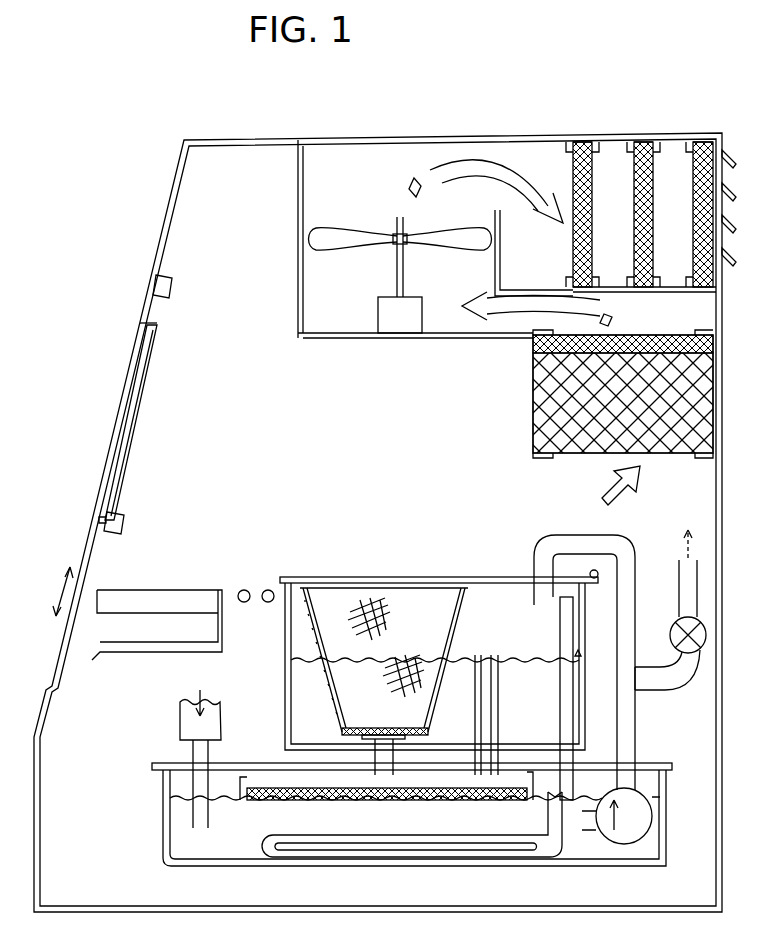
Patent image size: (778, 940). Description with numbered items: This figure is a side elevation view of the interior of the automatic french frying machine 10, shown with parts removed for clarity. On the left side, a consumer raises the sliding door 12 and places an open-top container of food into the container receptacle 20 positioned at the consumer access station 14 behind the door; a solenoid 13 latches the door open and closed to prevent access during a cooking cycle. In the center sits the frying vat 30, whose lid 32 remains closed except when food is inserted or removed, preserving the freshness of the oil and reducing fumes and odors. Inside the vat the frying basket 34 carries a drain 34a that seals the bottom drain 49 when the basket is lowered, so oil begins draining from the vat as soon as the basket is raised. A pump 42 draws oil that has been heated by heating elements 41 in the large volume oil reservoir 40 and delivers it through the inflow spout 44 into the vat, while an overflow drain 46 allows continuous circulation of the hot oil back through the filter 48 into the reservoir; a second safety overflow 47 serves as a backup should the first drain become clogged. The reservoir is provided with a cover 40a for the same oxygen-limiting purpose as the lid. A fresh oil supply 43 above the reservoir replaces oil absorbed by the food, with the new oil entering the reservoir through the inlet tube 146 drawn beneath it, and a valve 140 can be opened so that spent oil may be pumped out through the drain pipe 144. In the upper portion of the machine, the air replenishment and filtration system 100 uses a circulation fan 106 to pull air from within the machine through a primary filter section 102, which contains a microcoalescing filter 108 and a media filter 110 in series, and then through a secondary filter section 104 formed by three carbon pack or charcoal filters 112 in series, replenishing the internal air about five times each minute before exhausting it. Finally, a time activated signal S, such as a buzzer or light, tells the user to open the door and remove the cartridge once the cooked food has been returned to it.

The automatic french frying machine 10 is at (110, 95).
The air replenishment and filtration system 100 is at (365, 352).
The secondary filter section 104 is at (647, 130).
The circulation fan 106 is at (395, 278).
The carbon pack or charcoal filters 112 is at (702, 292).
The media filter 110 is at (540, 345).
The primary filter section 102 is at (531, 380).
The microcoalescing filter 108 is at (545, 406).
The time activated signal S is at (172, 283).
The sliding door 12 is at (96, 543).
The solenoid 13 is at (124, 524).
The consumer access station 14 is at (95, 632).
The container receptacle 20 is at (127, 652).
The frying vat 30 is at (414, 640).
The lid 32 is at (362, 578).
The frying basket 34 is at (458, 626).
The drain 34a is at (400, 728).
The bottom drain 49 is at (372, 750).
The overflow drain 46 is at (498, 706).
The second safety overflow 47 is at (560, 627).
The inflow spout 44 is at (563, 535).
The valve 140 is at (670, 632).
The drain pipe 144 is at (680, 589).
The oil reservoir 40 is at (242, 866).
The cover 40a is at (652, 762).
The heating elements 41 is at (360, 857).
The pump 42 is at (650, 822).
The filter 48 is at (270, 790).
The fresh oil supply 43 is at (180, 716).
The new oil inlet tube 146 is at (192, 752).